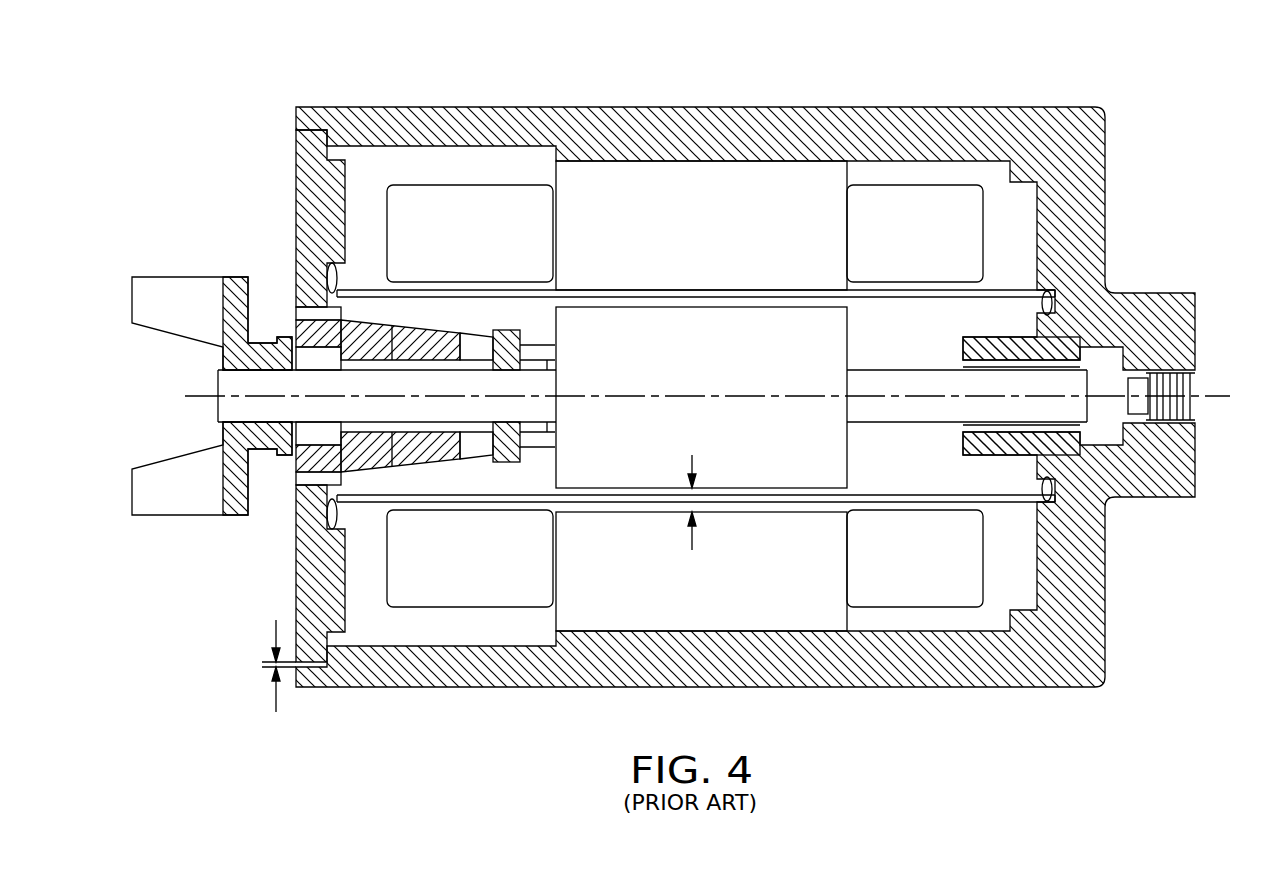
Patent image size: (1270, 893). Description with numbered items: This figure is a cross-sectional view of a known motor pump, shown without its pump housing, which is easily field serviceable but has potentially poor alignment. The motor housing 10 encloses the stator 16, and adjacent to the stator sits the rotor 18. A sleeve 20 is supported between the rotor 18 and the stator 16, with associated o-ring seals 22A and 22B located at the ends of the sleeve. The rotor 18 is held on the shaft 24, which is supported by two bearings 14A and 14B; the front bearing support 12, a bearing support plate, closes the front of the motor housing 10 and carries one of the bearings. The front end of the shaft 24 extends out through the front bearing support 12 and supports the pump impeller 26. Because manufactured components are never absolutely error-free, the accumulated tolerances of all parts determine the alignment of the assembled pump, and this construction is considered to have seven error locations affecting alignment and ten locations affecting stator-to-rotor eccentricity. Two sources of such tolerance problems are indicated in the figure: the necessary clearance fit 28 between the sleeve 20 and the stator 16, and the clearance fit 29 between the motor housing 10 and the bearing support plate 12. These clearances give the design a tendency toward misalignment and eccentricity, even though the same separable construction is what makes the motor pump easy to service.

The motor housing 10 is at (442, 117).
The front bearing support 12 is at (305, 183).
The bearing 14A is at (392, 355).
The bearing 14B is at (1000, 360).
The stator 16 is at (588, 190).
The rotor 18 is at (762, 333).
The sleeve 20 is at (642, 288).
The o-ring seal 22A is at (330, 515).
The o-ring seal 22B is at (1053, 490).
The shaft 24 is at (233, 412).
The pump impeller 26 is at (183, 275).
The clearance fit 28 is at (693, 498).
The clearance fit 29 is at (265, 666).